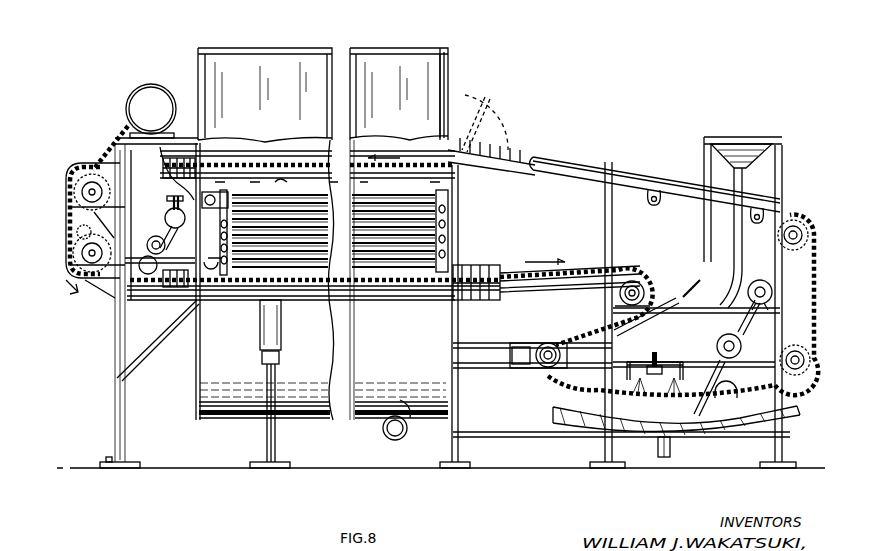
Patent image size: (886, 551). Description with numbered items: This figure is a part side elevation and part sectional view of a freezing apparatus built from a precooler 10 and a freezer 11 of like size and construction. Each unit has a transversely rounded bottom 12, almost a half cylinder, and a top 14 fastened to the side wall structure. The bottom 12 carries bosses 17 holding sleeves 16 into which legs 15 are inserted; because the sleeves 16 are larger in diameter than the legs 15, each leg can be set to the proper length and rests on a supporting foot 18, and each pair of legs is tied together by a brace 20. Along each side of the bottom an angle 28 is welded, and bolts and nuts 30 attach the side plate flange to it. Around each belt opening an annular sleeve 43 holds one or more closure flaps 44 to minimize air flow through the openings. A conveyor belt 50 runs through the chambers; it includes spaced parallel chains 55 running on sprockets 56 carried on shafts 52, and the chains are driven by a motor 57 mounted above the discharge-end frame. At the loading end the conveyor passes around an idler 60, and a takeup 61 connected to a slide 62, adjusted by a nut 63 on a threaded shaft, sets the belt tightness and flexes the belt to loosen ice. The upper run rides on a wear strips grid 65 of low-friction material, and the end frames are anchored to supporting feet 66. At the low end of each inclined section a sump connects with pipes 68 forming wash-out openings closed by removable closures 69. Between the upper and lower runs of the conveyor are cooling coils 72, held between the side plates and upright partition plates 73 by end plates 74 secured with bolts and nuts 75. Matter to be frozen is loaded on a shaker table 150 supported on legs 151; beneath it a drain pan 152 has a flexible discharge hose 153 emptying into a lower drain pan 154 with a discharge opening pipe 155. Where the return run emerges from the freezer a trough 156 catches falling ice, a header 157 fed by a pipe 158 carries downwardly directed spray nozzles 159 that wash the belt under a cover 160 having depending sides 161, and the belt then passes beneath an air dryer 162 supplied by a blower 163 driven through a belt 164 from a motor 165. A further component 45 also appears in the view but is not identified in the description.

The precooler 10 is at (461, 69).
The freezer 11 is at (192, 56).
The bottom 12 is at (192, 415).
The top 14 is at (250, 60).
The legs 15 is at (276, 438).
The sleeves 16 is at (262, 360).
The bosses 17 is at (260, 334).
The supporting foot 18 is at (126, 468).
The brace 20 is at (312, 408).
The angle 28 is at (230, 300).
The bolts and nuts 30 is at (370, 300).
The annular sleeve 43 is at (494, 268).
The closure flaps 44 is at (446, 138).
The cabinet side panel 45 is at (450, 48).
The conveyor belt 50 is at (298, 300).
The shafts 52 is at (90, 188).
The chains 55 is at (76, 210).
The sprockets 56 is at (82, 152).
The motor 57 is at (150, 100).
The idler 60 is at (646, 250).
The takeup 61 is at (518, 380).
The slide 62 is at (522, 345).
The nut 63 is at (586, 330).
The wear strips grid 65 is at (272, 150).
The supporting feet 66 is at (440, 465).
The pipes 68 is at (400, 401).
The removable closures 69 is at (383, 430).
The cooling coils 72 is at (292, 212).
The partition plates 73 is at (432, 178).
The end members or plates 74 is at (222, 230).
The bolts and nuts 75 is at (440, 243).
The shaker table 150 is at (778, 140).
The legs 151 is at (704, 160).
The drain pan 152 is at (740, 148).
The flexible discharge hose 153 is at (733, 241).
The drain pan 154 is at (700, 425).
The discharge opening pipe 155 is at (657, 448).
The trough 156 is at (683, 297).
The header 157 is at (668, 362).
The pipe 158 is at (660, 351).
The spray nozzles 159 is at (650, 396).
The cover 160 is at (640, 362).
The depending sides 161 is at (606, 389).
The air dryer 162 is at (88, 282).
The blower 163 is at (152, 238).
The belt 164 is at (167, 226).
The motor 165 is at (172, 204).